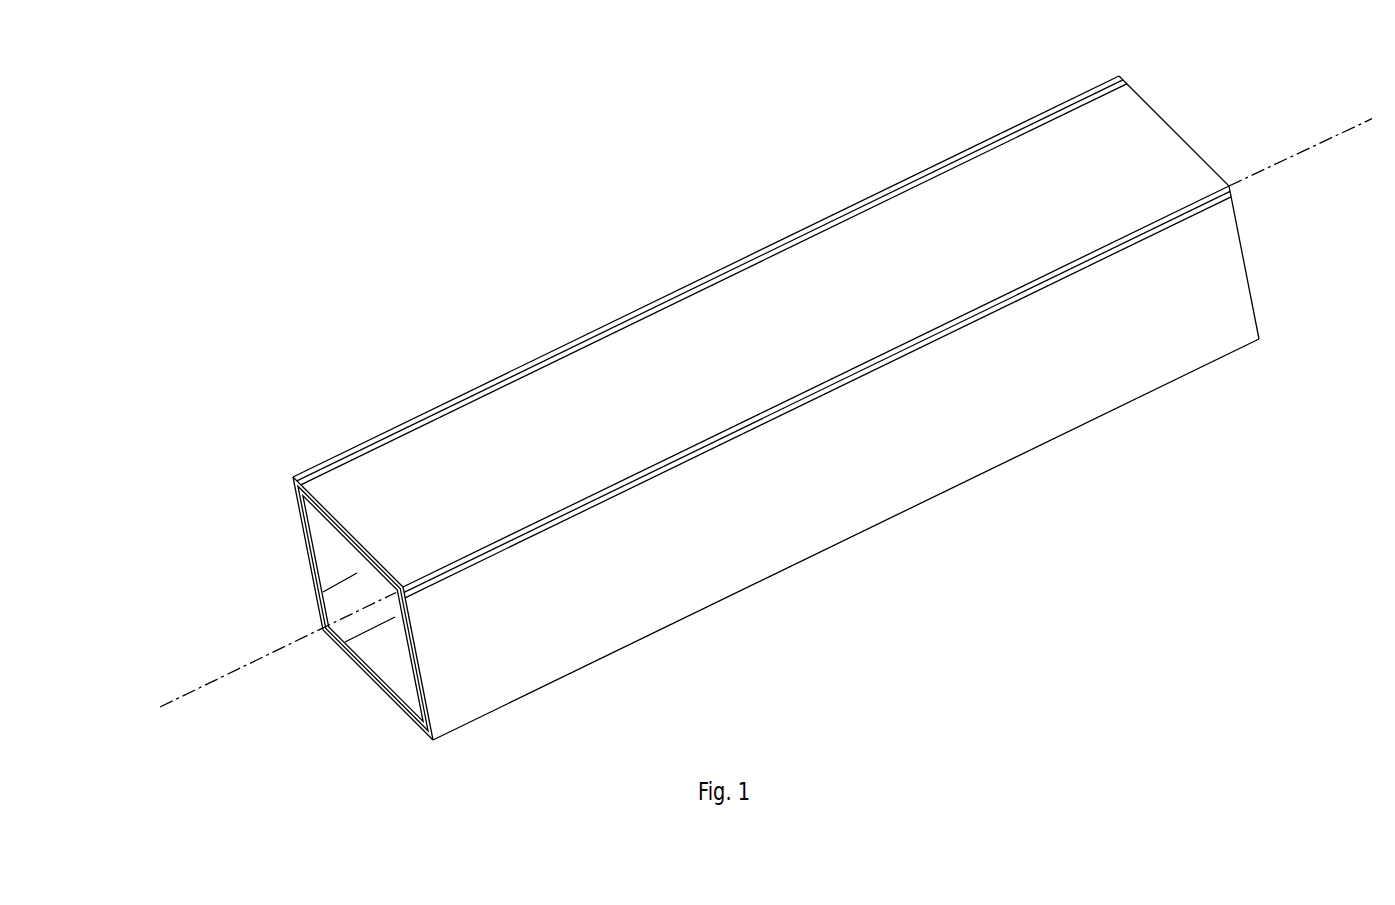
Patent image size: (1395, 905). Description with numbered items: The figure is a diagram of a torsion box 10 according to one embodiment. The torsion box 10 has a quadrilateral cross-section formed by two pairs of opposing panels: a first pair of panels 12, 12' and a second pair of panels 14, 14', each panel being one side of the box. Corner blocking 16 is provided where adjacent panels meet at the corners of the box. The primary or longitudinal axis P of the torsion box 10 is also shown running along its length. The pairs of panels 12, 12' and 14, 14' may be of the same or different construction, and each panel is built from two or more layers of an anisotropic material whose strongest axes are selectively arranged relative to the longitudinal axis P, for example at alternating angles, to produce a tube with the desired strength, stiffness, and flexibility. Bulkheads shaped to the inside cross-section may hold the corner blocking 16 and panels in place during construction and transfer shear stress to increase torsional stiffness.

The torsion box 10 is at (708, 401).
The panel 12 is at (710, 274).
The panel 12' is at (817, 463).
The panel 14 is at (710, 325).
The panel 14' is at (335, 656).
The corner blocking 16 is at (305, 513).
The longitudinal axis P is at (208, 672).